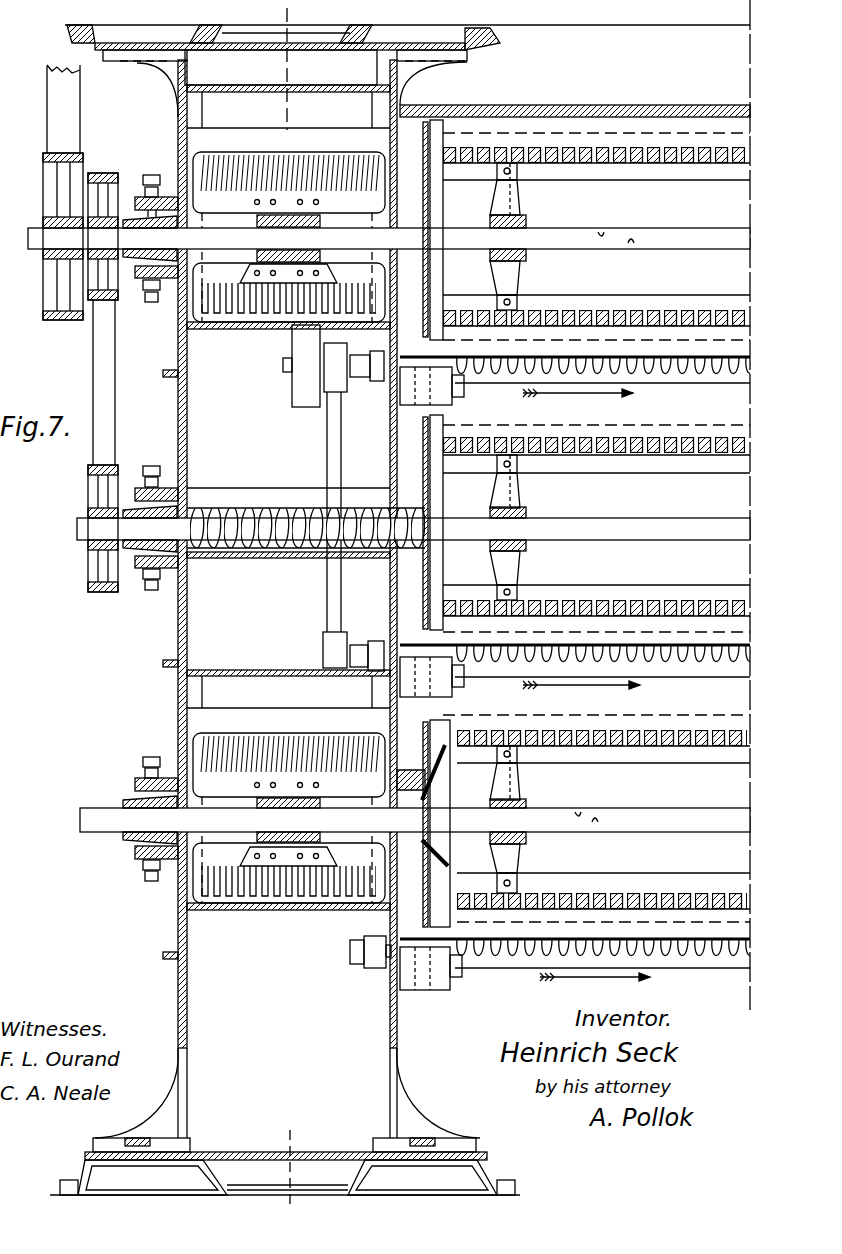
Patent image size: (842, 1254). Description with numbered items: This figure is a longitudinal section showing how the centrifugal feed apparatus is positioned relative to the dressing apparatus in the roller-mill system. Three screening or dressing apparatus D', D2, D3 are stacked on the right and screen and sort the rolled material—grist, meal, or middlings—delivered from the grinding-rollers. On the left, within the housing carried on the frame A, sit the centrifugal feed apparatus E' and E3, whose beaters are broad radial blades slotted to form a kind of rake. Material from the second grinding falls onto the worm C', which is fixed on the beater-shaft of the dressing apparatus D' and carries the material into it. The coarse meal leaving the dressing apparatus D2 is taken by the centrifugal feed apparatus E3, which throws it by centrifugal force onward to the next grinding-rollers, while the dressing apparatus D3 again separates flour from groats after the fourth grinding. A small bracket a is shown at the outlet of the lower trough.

The frame standards A is at (400, 605).
The centrifugal feed apparatus E' is at (289, 219).
The centrifugal feed apparatus E3 is at (292, 709).
The worm C' is at (306, 517).
The dressing apparatus D3 is at (660, 293).
The dressing apparatus D' is at (575, 565).
The dressing apparatus D2 is at (682, 801).
The deflector bracket a is at (403, 803).